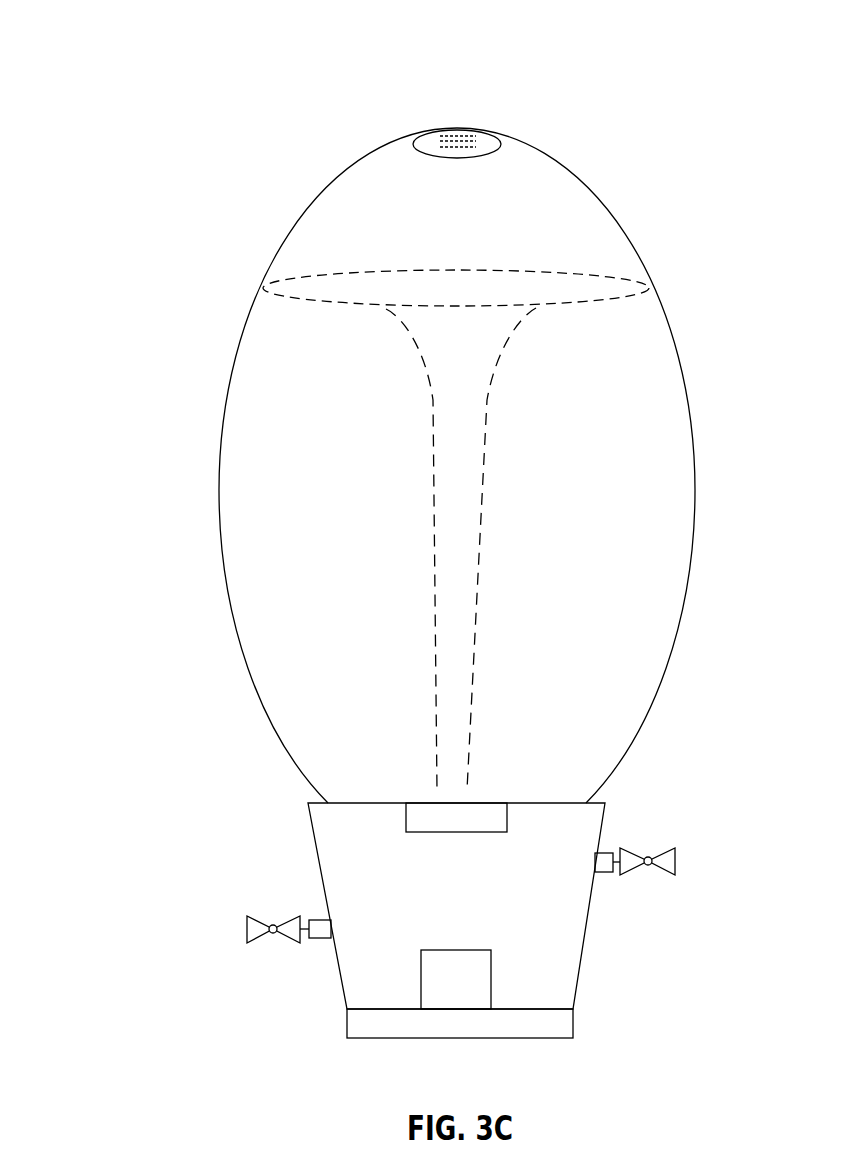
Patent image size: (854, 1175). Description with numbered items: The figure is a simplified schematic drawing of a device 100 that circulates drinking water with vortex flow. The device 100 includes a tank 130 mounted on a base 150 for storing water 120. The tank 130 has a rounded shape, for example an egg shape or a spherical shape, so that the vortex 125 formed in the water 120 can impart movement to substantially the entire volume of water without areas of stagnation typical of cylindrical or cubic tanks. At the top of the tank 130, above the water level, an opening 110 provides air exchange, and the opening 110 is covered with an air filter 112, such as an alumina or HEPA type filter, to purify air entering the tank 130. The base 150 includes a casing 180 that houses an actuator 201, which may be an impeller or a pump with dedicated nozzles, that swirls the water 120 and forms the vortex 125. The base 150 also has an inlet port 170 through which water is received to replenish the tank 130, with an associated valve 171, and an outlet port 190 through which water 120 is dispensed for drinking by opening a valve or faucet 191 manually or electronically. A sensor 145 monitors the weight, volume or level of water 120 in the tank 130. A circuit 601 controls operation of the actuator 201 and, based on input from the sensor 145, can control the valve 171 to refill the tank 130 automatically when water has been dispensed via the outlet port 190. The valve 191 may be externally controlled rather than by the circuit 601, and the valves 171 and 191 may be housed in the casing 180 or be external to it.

The device 100 is at (160, 90).
The opening 110 is at (412, 150).
The air filter 112 is at (463, 140).
The water 120 is at (419, 476).
The vortex 125 is at (375, 271).
The tank 130 is at (232, 375).
The sensor 145 is at (406, 818).
The base 150 is at (312, 1008).
The inlet port 170 is at (612, 873).
The valve 171 is at (667, 874).
The casing 180 is at (312, 835).
The outlet port 190 is at (303, 943).
The valve or faucet 191 is at (247, 938).
The actuator 201 is at (492, 990).
The circuit 601 is at (573, 1025).